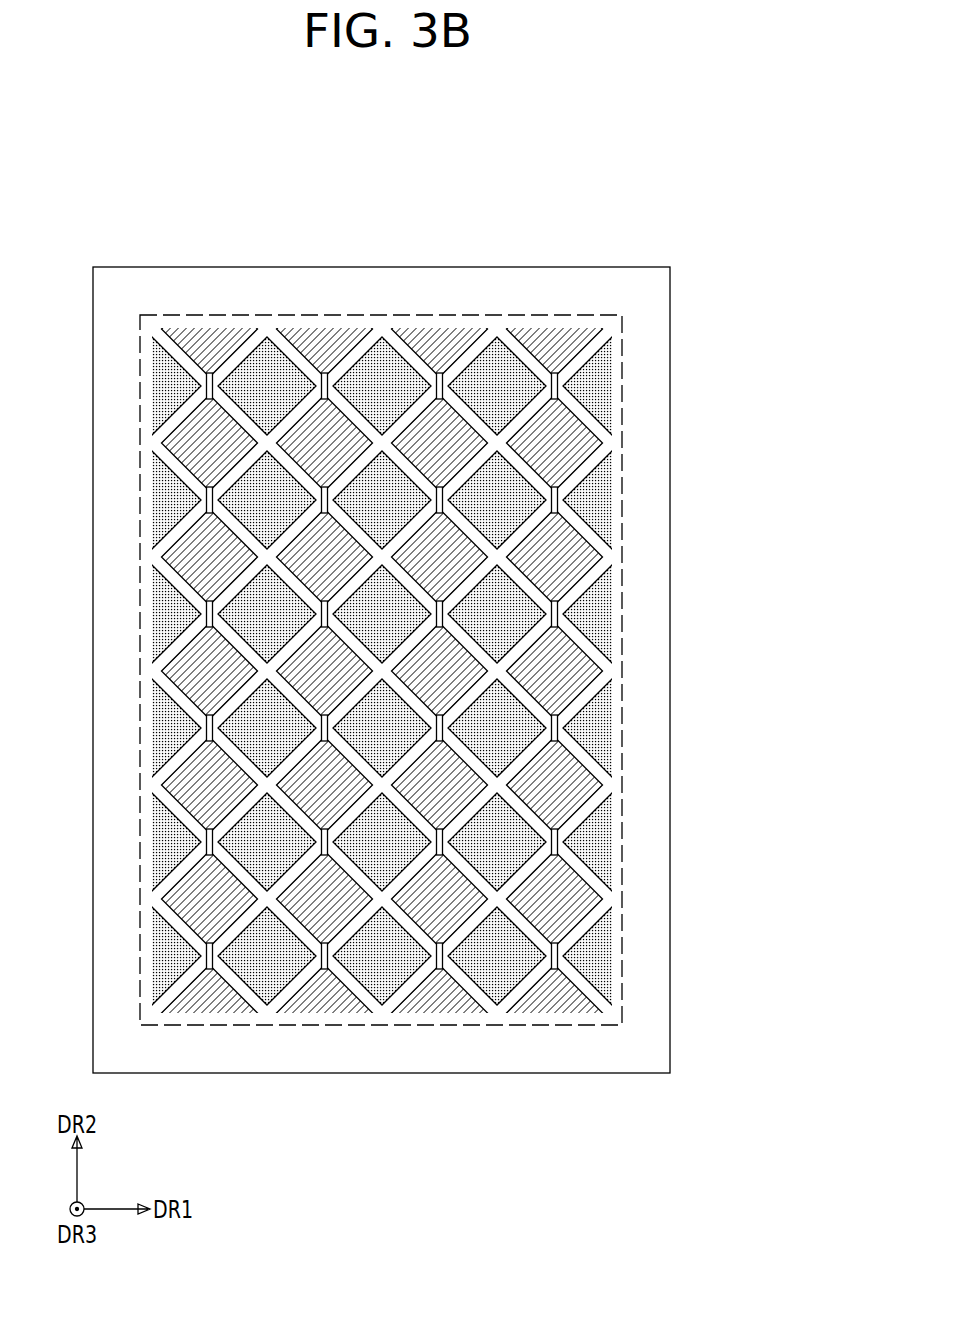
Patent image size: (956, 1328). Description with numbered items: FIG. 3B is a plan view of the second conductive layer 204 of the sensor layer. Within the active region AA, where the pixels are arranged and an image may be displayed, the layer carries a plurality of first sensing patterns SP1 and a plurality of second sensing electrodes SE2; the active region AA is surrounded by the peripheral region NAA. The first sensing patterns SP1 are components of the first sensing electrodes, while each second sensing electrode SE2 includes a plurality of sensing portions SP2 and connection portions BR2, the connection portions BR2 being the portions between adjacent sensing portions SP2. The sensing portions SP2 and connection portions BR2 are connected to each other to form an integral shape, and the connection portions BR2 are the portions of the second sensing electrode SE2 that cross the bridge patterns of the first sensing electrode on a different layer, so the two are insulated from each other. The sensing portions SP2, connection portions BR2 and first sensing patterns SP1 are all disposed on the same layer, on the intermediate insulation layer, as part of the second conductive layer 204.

The second conductive layer 204 is at (630, 208).
The active region AA is at (378, 334).
The peripheral region NAA is at (650, 354).
The first sensing patterns SP1 is at (382, 671).
The sensing portions SP2 is at (382, 671).
The connection portions BR2 is at (382, 671).
The second sensing electrodes SE2 is at (382, 671).